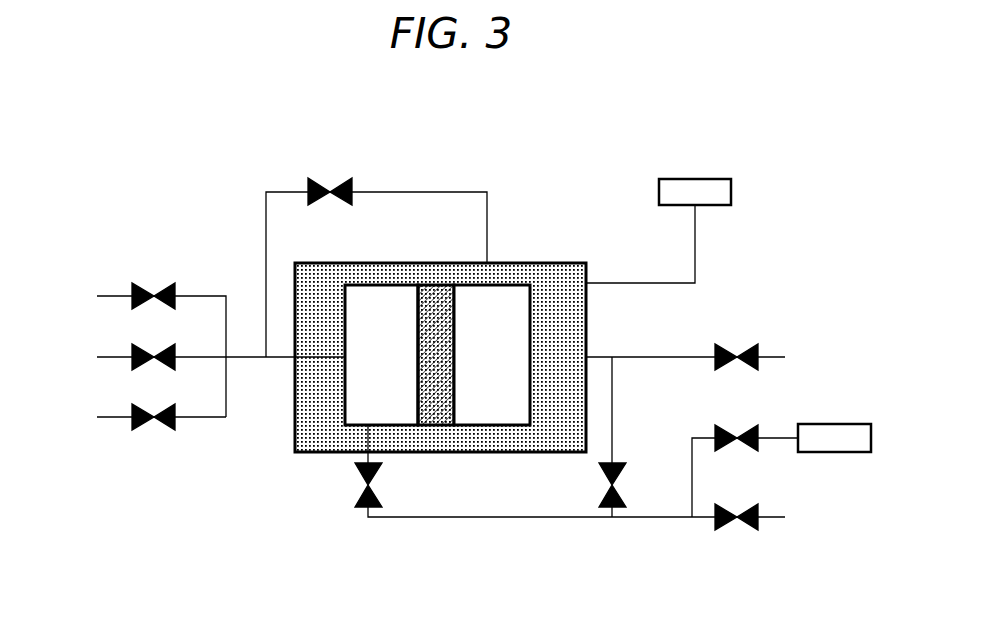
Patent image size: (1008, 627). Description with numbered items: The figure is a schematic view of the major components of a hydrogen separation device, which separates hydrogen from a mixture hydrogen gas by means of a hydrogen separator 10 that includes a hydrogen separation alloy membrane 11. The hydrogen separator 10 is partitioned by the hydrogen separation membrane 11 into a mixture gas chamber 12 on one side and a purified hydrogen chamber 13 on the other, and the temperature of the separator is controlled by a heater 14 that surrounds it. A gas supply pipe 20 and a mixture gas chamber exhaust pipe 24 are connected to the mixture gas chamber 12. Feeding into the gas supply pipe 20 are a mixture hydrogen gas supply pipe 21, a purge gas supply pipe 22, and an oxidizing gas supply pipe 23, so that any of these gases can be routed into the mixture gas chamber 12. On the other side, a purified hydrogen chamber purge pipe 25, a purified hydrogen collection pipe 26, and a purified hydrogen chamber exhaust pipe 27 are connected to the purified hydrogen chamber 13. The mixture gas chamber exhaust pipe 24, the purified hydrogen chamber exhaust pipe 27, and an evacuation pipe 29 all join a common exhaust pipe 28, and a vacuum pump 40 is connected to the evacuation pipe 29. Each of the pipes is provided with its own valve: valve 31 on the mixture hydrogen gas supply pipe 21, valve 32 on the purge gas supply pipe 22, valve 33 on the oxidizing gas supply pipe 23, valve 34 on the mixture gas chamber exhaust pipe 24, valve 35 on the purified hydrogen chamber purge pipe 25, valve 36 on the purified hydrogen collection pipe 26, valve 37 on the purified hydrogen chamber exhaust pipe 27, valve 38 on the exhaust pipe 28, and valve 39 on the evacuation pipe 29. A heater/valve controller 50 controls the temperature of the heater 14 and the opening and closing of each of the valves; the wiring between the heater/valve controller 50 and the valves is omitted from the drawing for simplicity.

The hydrogen separator 10 is at (452, 260).
The hydrogen separation alloy membrane 11 is at (437, 298).
The mixture gas chamber 12 is at (388, 298).
The purified hydrogen chamber 13 is at (499, 298).
The heater 14 is at (558, 270).
The gas supply pipe 20 is at (250, 360).
The mixture hydrogen gas supply pipe 21 is at (147, 350).
The purge gas supply pipe 22 is at (147, 357).
The oxidizing gas supply pipe 23 is at (147, 417).
The mixture gas chamber exhaust pipe 24 is at (366, 437).
The purified hydrogen chamber purge pipe 25 is at (266, 209).
The purified hydrogen collection pipe 26 is at (700, 357).
The purified hydrogen chamber exhaust pipe 27 is at (613, 400).
The exhaust pipe 28 is at (591, 517).
The evacuation pipe 29 is at (703, 435).
The valve 31 is at (148, 290).
The valve 32 is at (149, 352).
The valve 33 is at (152, 411).
The valve 34 is at (377, 492).
The valve 35 is at (326, 186).
The valve 36 is at (732, 351).
The valve 37 is at (620, 493).
The valve 38 is at (731, 512).
The valve 39 is at (731, 432).
The vacuum pump 40 is at (833, 424).
The heater/valve controller 50 is at (683, 179).